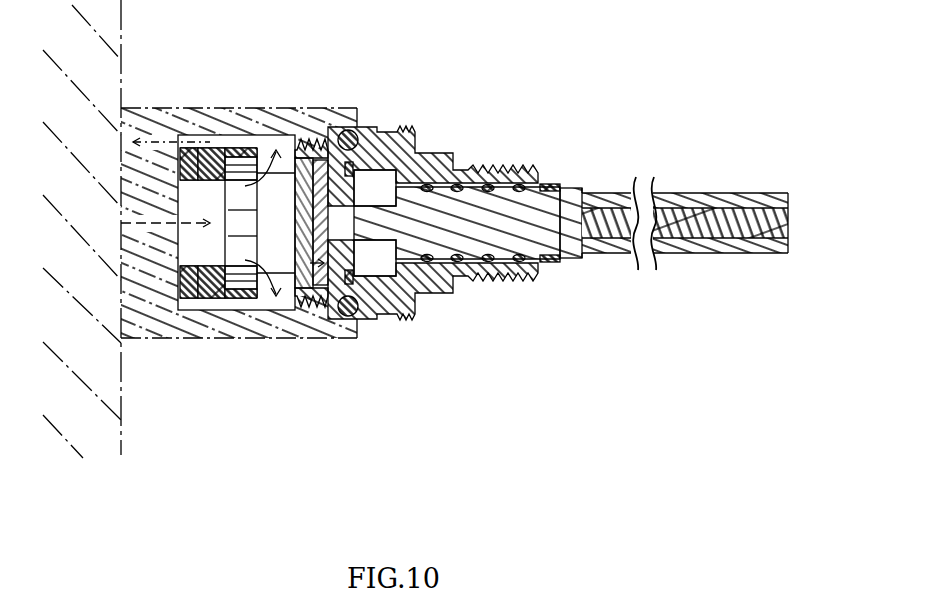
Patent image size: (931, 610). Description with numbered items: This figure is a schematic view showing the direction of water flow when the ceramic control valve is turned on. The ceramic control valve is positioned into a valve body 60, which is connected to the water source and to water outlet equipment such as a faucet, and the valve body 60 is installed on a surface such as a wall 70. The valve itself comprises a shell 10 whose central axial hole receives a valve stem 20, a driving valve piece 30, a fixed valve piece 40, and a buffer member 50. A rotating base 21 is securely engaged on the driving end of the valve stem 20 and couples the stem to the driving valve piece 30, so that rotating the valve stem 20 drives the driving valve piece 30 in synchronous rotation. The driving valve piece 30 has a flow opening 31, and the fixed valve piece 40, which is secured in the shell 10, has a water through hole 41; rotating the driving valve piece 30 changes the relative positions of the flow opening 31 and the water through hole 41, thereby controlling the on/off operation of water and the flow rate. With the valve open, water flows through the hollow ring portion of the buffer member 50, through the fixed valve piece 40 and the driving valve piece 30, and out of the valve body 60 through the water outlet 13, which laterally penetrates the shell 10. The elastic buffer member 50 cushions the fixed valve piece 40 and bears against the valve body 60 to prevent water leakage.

The shell 10 is at (422, 213).
The water outlet 13 is at (283, 152).
The valve stem 20 is at (789, 186).
The rotating base 21 is at (348, 130).
The driving valve piece 30 is at (376, 318).
The flow opening 31 is at (299, 275).
The fixed valve piece 40 is at (230, 147).
The water through hole 41 is at (237, 270).
The buffer member 50 is at (190, 312).
The valve body 60 is at (359, 346).
The wall 70 is at (128, 447).